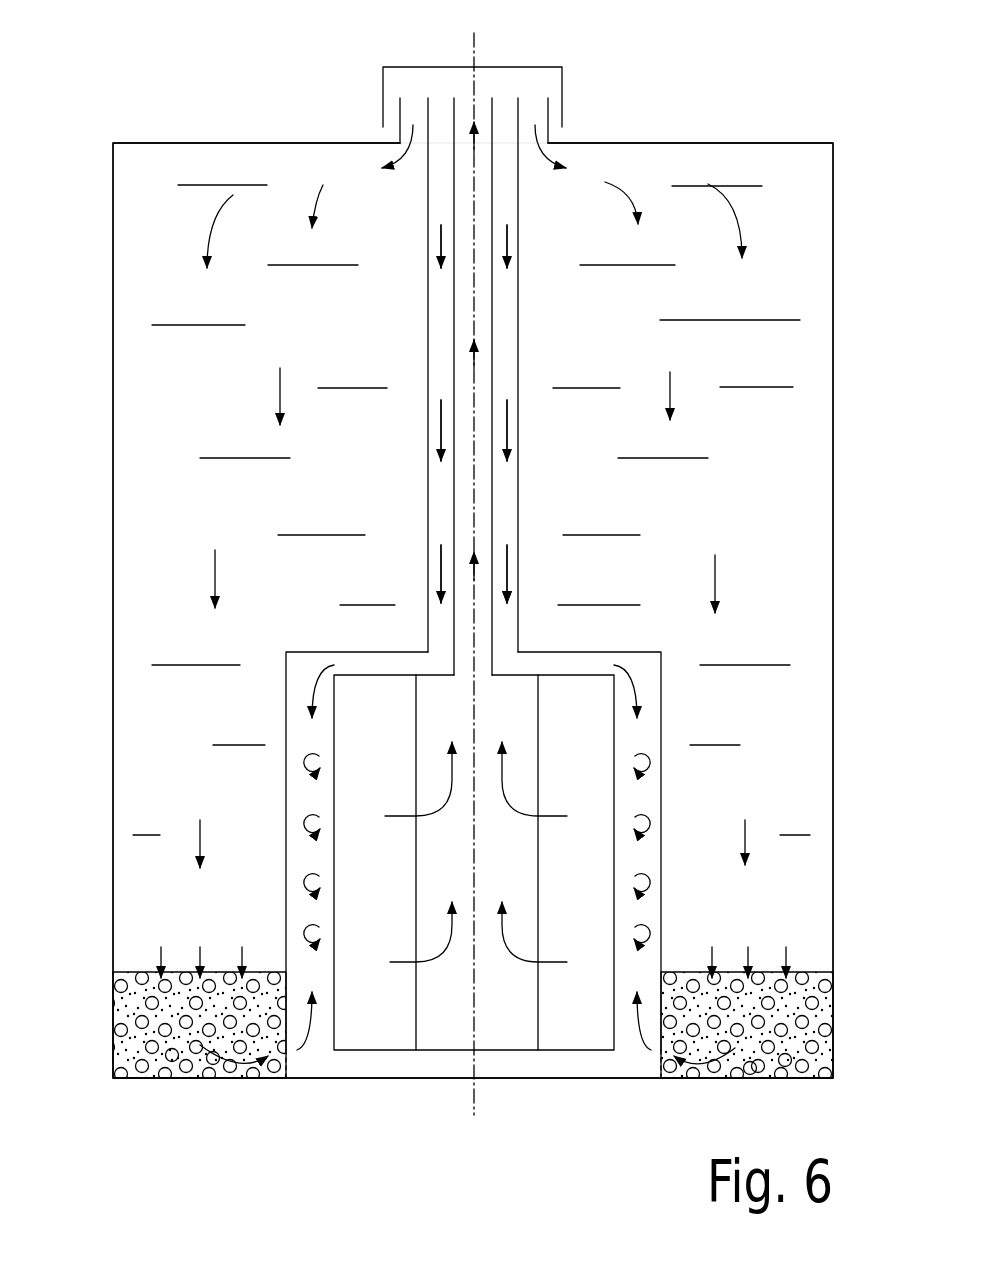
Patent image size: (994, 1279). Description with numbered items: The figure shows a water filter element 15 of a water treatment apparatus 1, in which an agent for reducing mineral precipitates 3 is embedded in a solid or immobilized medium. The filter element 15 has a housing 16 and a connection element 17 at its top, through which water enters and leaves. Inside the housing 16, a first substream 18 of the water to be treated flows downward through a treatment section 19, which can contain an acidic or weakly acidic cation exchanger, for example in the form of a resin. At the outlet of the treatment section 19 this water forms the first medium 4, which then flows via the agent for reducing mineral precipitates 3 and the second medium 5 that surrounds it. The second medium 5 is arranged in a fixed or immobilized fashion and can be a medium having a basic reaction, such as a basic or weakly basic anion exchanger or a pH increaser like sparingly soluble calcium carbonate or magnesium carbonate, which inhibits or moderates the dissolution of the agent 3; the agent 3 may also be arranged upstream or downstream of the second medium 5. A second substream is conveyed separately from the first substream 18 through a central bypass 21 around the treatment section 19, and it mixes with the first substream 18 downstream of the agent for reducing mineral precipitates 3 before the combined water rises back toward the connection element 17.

The water treatment apparatus 1 is at (296, 67).
The agent for reducing mineral precipitates 3 is at (213, 1065).
The first medium 4 is at (242, 957).
The second medium 5 is at (128, 1023).
The filter element 15 is at (694, 93).
The housing 16 is at (850, 384).
The connection element 17 is at (437, 55).
The first substream 18 is at (276, 389).
The treatment section 19 is at (157, 487).
The bypass 21 is at (508, 352).